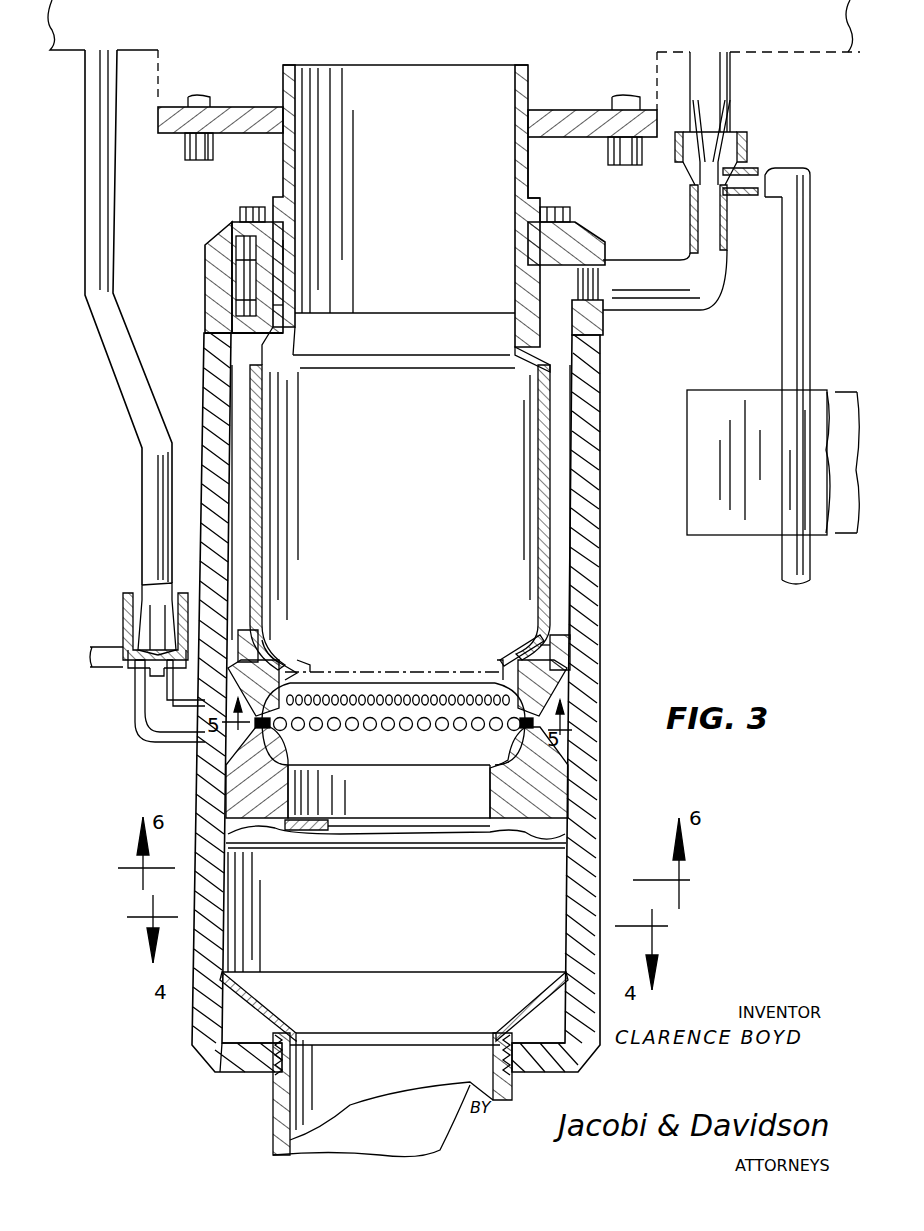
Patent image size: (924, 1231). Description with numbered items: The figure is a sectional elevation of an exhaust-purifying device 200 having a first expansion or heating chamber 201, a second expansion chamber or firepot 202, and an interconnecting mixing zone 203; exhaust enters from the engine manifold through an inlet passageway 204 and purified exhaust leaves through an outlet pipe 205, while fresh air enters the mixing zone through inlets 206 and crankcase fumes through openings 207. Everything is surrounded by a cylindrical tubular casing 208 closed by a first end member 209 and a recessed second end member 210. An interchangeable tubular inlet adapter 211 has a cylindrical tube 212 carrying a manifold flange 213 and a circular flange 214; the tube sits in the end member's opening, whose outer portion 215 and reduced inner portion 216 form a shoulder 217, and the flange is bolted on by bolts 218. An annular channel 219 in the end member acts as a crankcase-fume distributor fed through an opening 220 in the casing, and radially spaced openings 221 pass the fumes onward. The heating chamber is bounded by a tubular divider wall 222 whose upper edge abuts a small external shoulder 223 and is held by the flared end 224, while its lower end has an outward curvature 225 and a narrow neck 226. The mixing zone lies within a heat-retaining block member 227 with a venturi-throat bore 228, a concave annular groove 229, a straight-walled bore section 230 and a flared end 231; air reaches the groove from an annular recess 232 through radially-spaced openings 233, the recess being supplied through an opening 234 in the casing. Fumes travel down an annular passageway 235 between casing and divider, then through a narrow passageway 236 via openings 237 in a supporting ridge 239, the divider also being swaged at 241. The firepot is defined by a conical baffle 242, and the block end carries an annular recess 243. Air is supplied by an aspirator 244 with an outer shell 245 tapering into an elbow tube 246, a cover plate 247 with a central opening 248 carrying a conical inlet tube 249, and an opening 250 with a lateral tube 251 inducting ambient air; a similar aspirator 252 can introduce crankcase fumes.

The device 200 is at (606, 667).
The heating chamber 201 is at (455, 487).
The firepot 202 is at (424, 945).
The mixing zone 203 is at (452, 765).
The inlet passageway 204 is at (470, 92).
The outlet pipe 205 is at (272, 1103).
The inlets 206 is at (266, 731).
The openings 207 is at (278, 699).
The tubular casing 208 is at (600, 474).
The first end member 209 is at (568, 1081).
The second end member 210 is at (248, 285).
The tubular inlet adapter 211 is at (530, 85).
The cylindrical tube 212 is at (540, 192).
The flange 213 is at (262, 91).
The circular flange 214 is at (240, 210).
The outer portion 215 is at (285, 251).
The inner portion 216 is at (295, 336).
The shoulder 217 is at (283, 307).
The bolts 218 is at (214, 152).
The annular channel 219 is at (230, 270).
The opening 220 is at (606, 251).
The radially spaced openings 221 is at (600, 326).
The tubular divider wall 222 is at (538, 429).
The external shoulder 223 is at (232, 338).
The flared lower end 224 is at (529, 355).
The outward curvature 225 is at (272, 651).
The narrow neck 226 is at (312, 656).
The heat-retaining block member 227 is at (590, 801).
The central bore 228 is at (440, 701).
The concave annular groove 229 is at (483, 707).
The straight-walled bore section 230 is at (490, 796).
The end 231 is at (497, 831).
The annular recess 232 is at (600, 746).
The radially-spaced openings 233 is at (283, 723).
The opening 234 is at (200, 760).
The annular passageway 235 is at (560, 541).
The narrow passageway 236 is at (515, 656).
The openings 237 is at (550, 656).
The supporting ridge 239 is at (560, 641).
The swaged face 241 is at (308, 669).
The conical baffle 242 is at (498, 666).
The annular recess 243 is at (542, 848).
The aspirator 244 is at (113, 612).
The cylindrical outer shell 245 is at (123, 631).
The elbow tube 246 is at (140, 743).
The plate 247 is at (173, 612).
The central opening 248 is at (146, 592).
The conical inlet tube 249 is at (137, 656).
The opening 250 is at (140, 683).
The tube 251 is at (90, 652).
The aspirator 252 is at (750, 148).